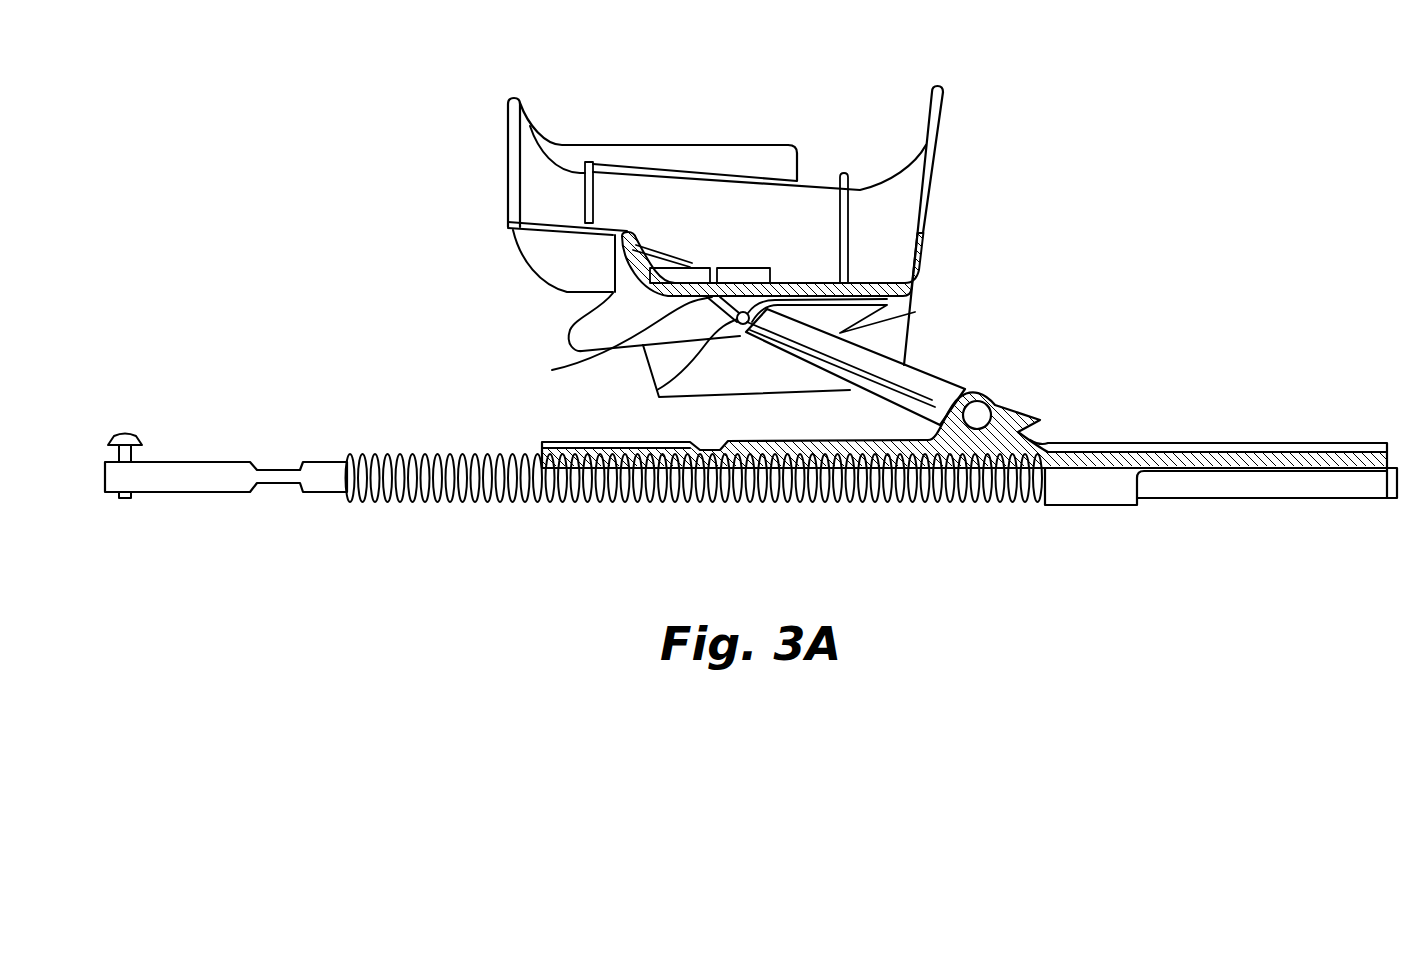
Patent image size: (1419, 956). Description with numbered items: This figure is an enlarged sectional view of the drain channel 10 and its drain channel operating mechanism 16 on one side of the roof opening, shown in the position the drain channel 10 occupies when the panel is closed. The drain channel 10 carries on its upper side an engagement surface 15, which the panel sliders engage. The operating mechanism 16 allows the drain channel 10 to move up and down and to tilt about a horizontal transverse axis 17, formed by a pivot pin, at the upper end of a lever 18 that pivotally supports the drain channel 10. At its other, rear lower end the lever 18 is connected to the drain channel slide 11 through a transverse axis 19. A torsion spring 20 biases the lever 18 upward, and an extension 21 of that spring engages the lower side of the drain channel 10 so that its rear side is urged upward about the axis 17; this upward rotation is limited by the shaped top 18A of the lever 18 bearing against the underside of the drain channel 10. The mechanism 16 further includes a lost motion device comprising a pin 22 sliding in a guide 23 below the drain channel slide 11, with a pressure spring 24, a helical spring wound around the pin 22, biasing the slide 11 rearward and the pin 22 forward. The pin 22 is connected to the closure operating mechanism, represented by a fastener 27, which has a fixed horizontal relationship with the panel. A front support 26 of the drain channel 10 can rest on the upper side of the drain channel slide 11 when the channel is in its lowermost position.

The drain channel 10 is at (922, 203).
The drain channel slide 11 is at (1198, 458).
The engagement surface 15 is at (665, 143).
The drain channel operating mechanism 16 is at (1056, 260).
The horizontal transverse axis 17 is at (657, 390).
The lever 18 is at (912, 375).
The top of lever 18A is at (553, 370).
The transverse axis 19 is at (978, 412).
The torsion spring 20 is at (932, 392).
The extension of spring 21 is at (914, 260).
The pin 22 is at (205, 477).
The guide 23 is at (1102, 492).
The pressure spring 24 is at (405, 503).
The front support 26 is at (580, 333).
The fastener 27 is at (127, 432).